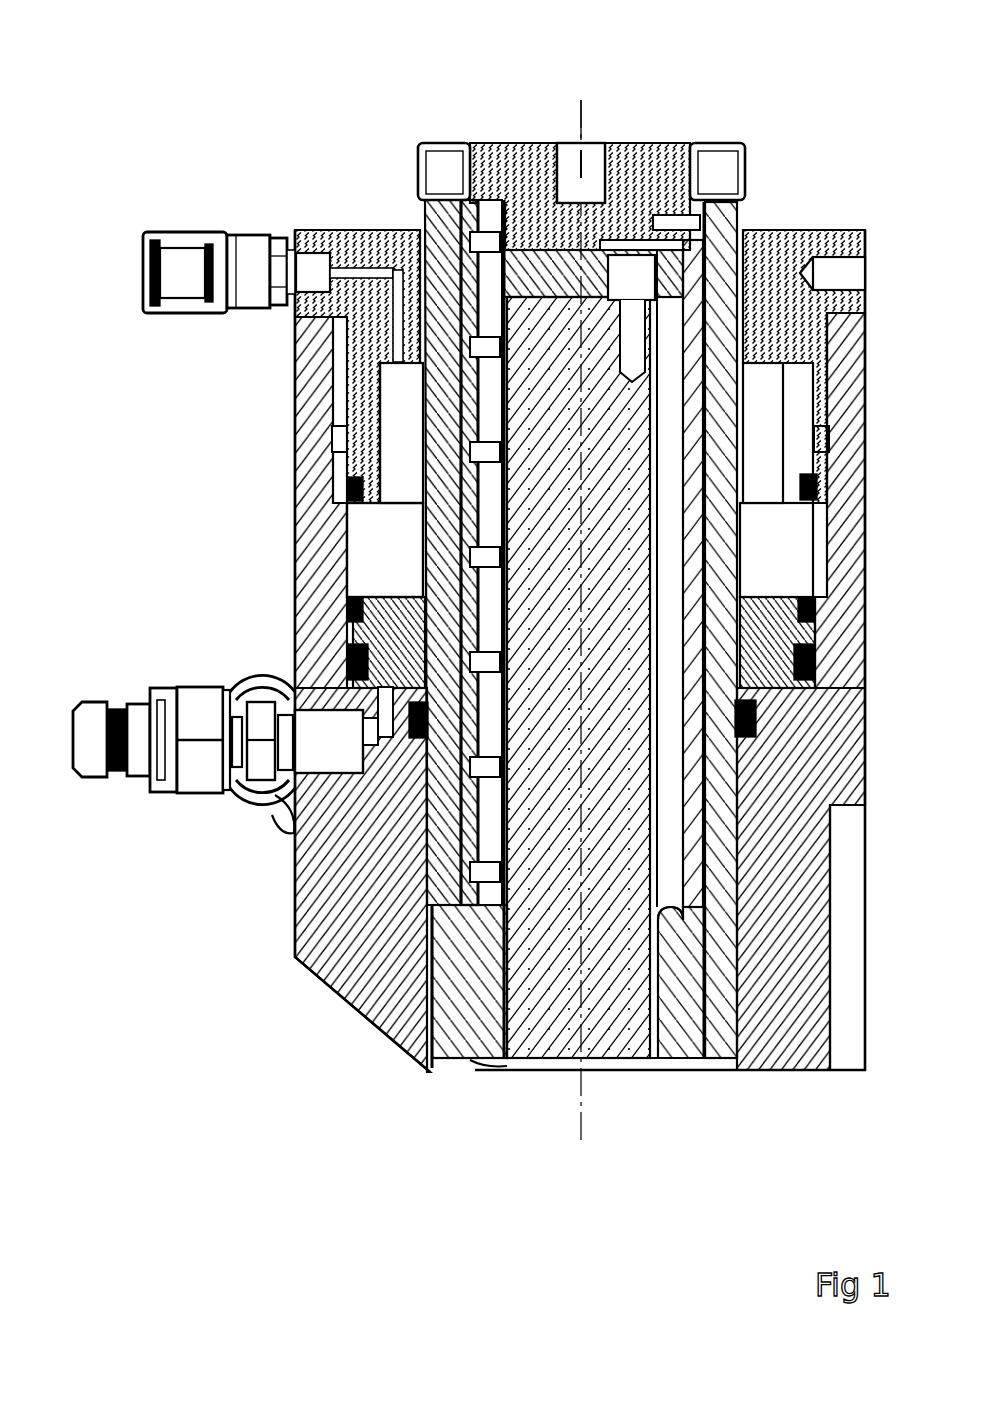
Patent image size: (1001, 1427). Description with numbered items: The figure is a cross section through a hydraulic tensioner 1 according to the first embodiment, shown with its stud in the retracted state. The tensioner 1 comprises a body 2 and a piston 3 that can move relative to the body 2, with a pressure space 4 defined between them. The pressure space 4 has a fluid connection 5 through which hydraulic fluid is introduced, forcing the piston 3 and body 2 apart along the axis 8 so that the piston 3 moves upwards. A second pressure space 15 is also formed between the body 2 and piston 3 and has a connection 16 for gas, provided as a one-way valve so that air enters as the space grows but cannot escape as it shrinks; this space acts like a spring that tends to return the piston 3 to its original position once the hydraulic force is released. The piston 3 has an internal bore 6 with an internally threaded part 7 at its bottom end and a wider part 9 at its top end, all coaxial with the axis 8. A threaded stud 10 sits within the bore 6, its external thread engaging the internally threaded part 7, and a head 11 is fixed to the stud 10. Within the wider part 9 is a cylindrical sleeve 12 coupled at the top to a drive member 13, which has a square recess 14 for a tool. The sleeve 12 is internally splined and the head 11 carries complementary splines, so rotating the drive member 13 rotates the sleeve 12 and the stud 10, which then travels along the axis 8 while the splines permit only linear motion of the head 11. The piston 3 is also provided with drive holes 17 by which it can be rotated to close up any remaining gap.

The tensioner 1 is at (463, 622).
The body 2 is at (294, 957).
The piston 3 is at (430, 906).
The pressure space 4 is at (357, 683).
The fluid connection 5 is at (118, 708).
The internal bore 6 is at (710, 290).
The internally threaded part 7 is at (505, 1052).
The axis 8 is at (578, 115).
The wider part 9 is at (707, 293).
The threaded stud 10 is at (537, 1036).
The head 11 is at (588, 250).
The cylindrical sleeve 12 is at (695, 890).
The drive member 13 is at (621, 158).
The square recess 14 is at (596, 150).
The second pressure space 15 is at (360, 546).
The connection 16 is at (220, 313).
The drive holes 17 is at (428, 185).